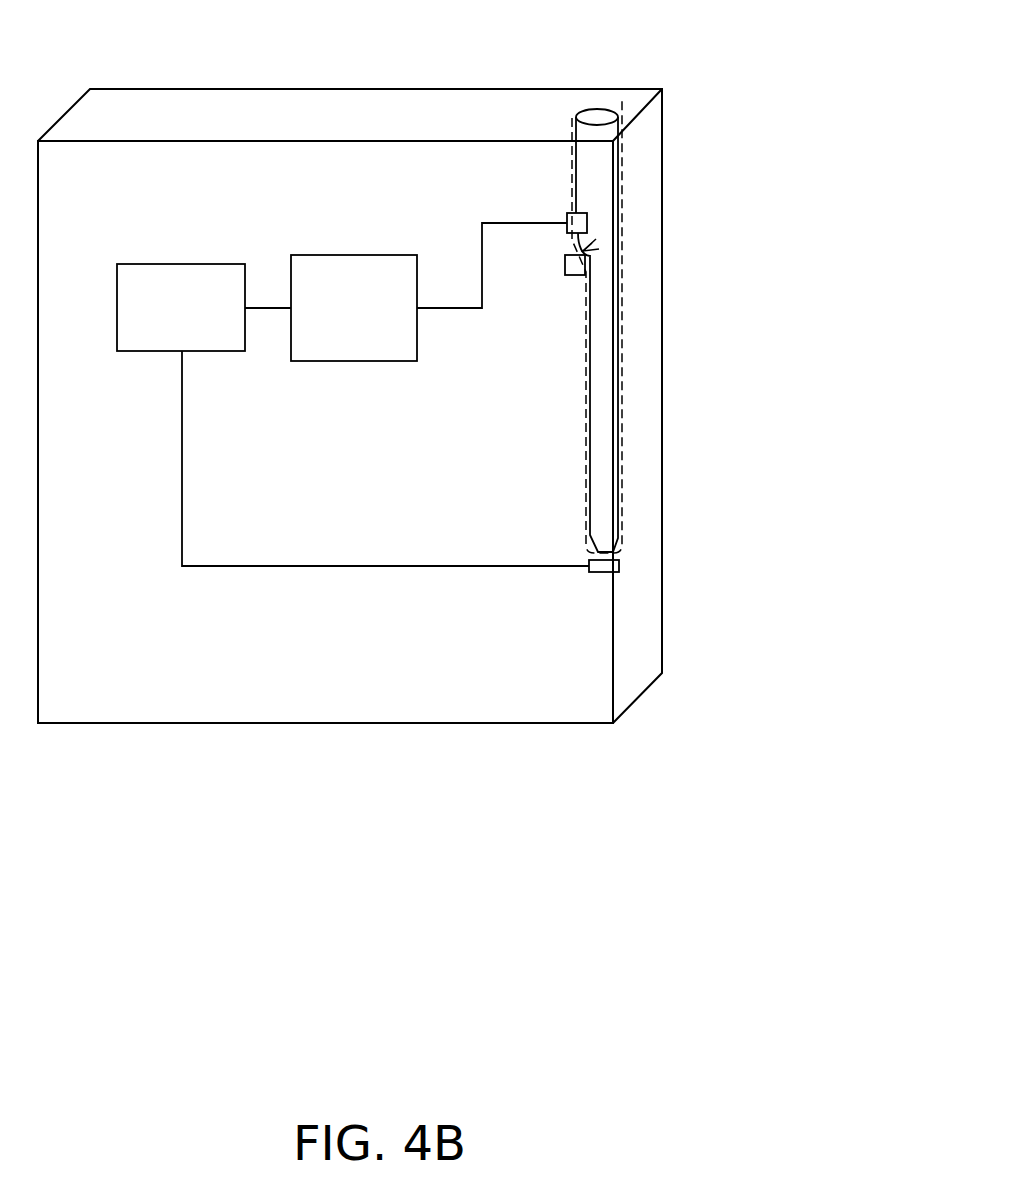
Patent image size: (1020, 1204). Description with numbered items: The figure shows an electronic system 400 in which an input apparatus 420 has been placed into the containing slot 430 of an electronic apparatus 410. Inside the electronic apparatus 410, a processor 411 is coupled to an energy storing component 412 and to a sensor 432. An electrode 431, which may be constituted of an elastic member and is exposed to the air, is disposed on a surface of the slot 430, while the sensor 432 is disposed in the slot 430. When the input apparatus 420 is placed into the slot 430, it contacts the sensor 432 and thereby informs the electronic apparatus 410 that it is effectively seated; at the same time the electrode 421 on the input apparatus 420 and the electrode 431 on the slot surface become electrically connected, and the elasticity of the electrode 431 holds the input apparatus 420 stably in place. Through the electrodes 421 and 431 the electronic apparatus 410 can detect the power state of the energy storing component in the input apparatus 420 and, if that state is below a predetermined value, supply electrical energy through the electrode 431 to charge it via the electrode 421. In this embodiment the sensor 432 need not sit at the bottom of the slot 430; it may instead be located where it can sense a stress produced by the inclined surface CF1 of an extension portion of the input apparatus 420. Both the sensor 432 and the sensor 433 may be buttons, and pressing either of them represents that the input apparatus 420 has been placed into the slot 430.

The electronic system 400 is at (409, 467).
The electronic apparatus 410 is at (550, 695).
The processor 411 is at (202, 264).
The energy storing component 412 is at (358, 255).
The input apparatus 420 is at (597, 115).
The containing slot 430 is at (614, 103).
The electrode 421 is at (588, 222).
The electrode 431 is at (567, 217).
The sensor 433 is at (565, 265).
The sensor 432 is at (619, 566).
The inclined surface CF1 is at (598, 247).